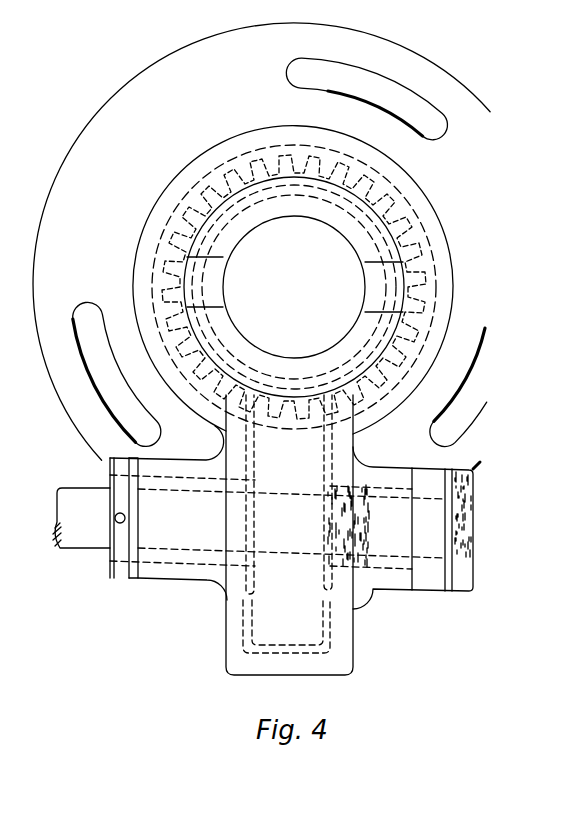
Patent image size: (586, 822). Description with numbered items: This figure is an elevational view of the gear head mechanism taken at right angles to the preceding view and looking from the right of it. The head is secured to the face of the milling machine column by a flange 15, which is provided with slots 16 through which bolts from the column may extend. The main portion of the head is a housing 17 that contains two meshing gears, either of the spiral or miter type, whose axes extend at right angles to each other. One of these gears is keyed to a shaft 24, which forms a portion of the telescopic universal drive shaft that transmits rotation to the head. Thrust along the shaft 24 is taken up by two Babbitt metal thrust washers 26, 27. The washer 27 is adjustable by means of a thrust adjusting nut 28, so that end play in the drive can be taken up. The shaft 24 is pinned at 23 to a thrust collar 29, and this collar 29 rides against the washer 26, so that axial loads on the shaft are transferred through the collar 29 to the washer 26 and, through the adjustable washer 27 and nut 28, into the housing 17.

The flange 15 is at (261, 241).
The slots 16 is at (280, 252).
The housing 17 is at (352, 652).
The pin 23 is at (117, 513).
The shaft 24 is at (88, 548).
The Babbitt metal thrust washer 26 is at (133, 580).
The Babbitt metal thrust washer 27 is at (448, 590).
The thrust adjusting nut 28 is at (464, 591).
The thrust collar 29 is at (118, 580).